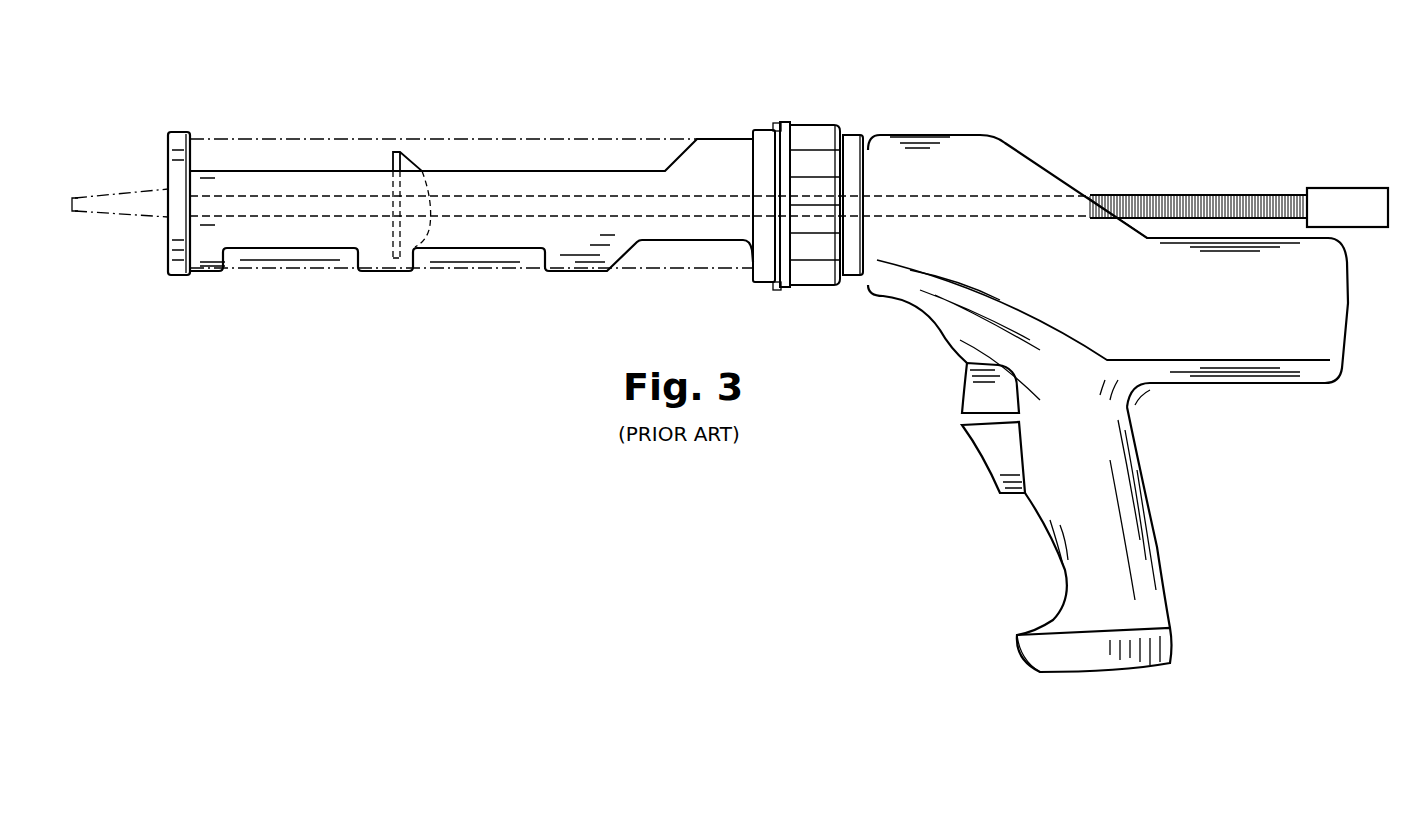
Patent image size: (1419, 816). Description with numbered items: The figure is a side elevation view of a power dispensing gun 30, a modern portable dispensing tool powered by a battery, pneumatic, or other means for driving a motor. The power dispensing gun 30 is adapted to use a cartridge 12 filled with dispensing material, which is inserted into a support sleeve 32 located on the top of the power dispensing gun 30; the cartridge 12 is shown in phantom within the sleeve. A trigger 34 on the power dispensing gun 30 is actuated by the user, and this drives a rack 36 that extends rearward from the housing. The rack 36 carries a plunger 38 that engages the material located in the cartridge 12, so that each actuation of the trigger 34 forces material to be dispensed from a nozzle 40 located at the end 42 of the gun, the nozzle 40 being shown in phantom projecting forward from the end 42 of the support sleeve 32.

The power dispensing gun 30 is at (1132, 75).
The cartridge 12 is at (543, 140).
The support sleeve 32 is at (573, 258).
The trigger 34 is at (982, 452).
The rack 36 is at (1247, 203).
The plunger 38 is at (410, 163).
The nozzle 40 is at (127, 217).
The end 42 is at (182, 148).